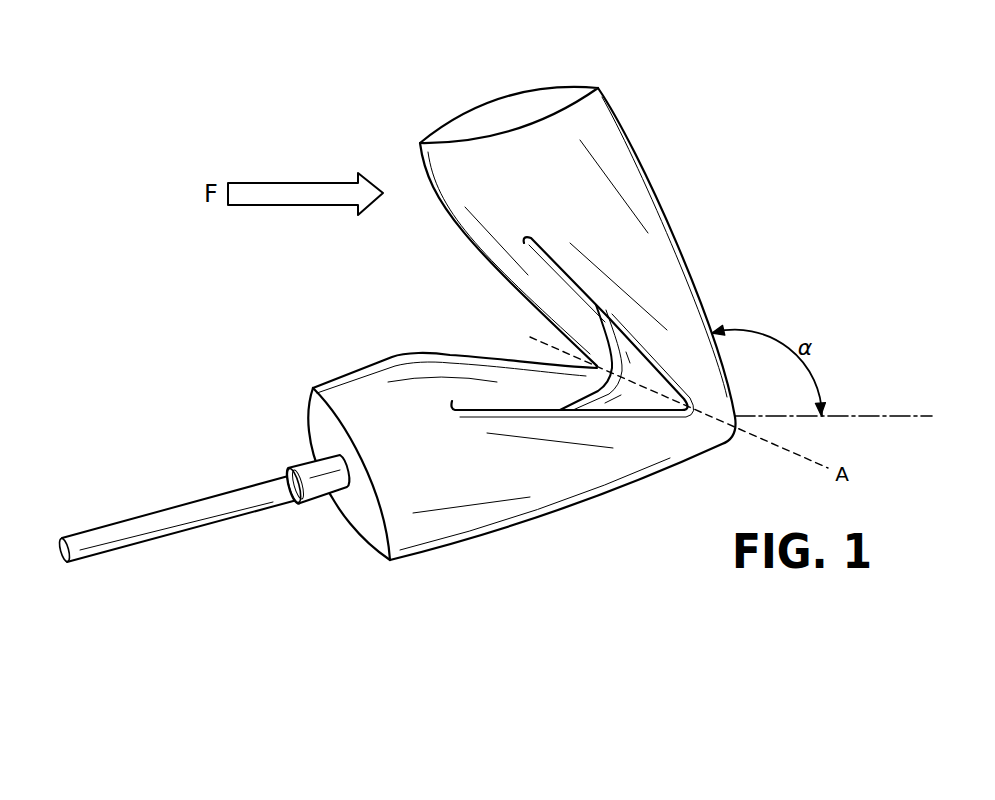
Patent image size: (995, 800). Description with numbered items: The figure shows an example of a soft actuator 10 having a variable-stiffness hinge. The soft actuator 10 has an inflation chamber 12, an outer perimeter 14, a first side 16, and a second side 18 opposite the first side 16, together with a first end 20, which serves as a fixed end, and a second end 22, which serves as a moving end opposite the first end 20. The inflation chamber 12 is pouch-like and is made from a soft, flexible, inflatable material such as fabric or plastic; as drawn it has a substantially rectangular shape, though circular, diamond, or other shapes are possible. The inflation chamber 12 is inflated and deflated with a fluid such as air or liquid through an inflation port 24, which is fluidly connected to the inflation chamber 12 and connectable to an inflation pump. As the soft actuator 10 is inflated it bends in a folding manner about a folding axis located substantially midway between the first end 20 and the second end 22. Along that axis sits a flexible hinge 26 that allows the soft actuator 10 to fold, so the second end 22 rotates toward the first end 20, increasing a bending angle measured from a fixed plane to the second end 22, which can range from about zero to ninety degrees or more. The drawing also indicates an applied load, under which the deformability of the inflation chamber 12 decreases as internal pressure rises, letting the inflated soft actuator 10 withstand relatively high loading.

The soft actuator 10 is at (653, 177).
The inflation chamber 12 is at (683, 243).
The outer perimeter 14 is at (698, 298).
The first side 16 is at (408, 400).
The second side 18 is at (565, 512).
The first end 20 is at (365, 537).
The second end 22 is at (598, 88).
The inflation port 24 is at (297, 463).
The hinge 26 is at (585, 402).